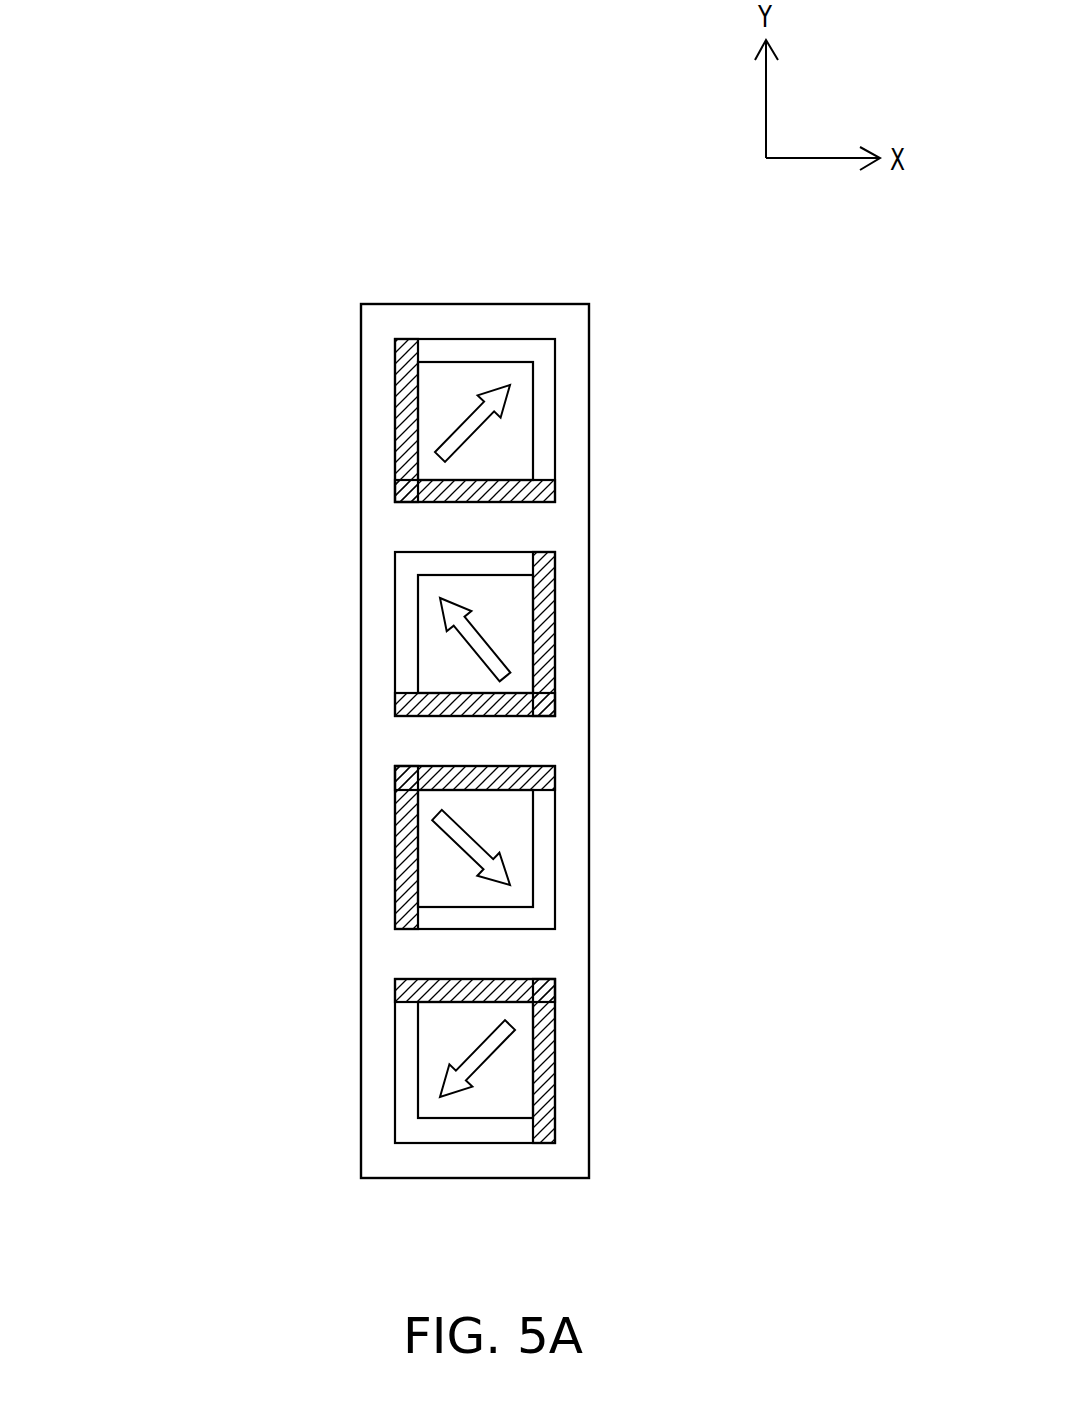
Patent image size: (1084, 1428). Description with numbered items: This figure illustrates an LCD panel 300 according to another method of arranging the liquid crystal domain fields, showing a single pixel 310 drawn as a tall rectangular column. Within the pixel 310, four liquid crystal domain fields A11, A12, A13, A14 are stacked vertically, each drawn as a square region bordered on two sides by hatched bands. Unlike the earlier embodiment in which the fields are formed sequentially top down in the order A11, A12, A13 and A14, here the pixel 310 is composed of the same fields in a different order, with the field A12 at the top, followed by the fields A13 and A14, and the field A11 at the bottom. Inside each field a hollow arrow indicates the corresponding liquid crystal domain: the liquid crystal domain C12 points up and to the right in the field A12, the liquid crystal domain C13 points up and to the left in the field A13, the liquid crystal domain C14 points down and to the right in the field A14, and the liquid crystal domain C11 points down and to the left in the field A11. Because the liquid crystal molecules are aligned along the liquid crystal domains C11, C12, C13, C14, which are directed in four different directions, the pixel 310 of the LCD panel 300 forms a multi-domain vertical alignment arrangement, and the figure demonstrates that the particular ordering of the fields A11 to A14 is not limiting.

The LCD panel 300 is at (132, 183).
The pixel 310 is at (492, 288).
The liquid crystal domain field A11 is at (637, 1061).
The liquid crystal domain field A12 is at (637, 420).
The liquid crystal domain field A13 is at (637, 634).
The liquid crystal domain field A14 is at (637, 847).
The liquid crystal domain C11 is at (478, 1067).
The liquid crystal domain C12 is at (476, 428).
The liquid crystal domain C13 is at (480, 635).
The liquid crystal domain C14 is at (476, 842).